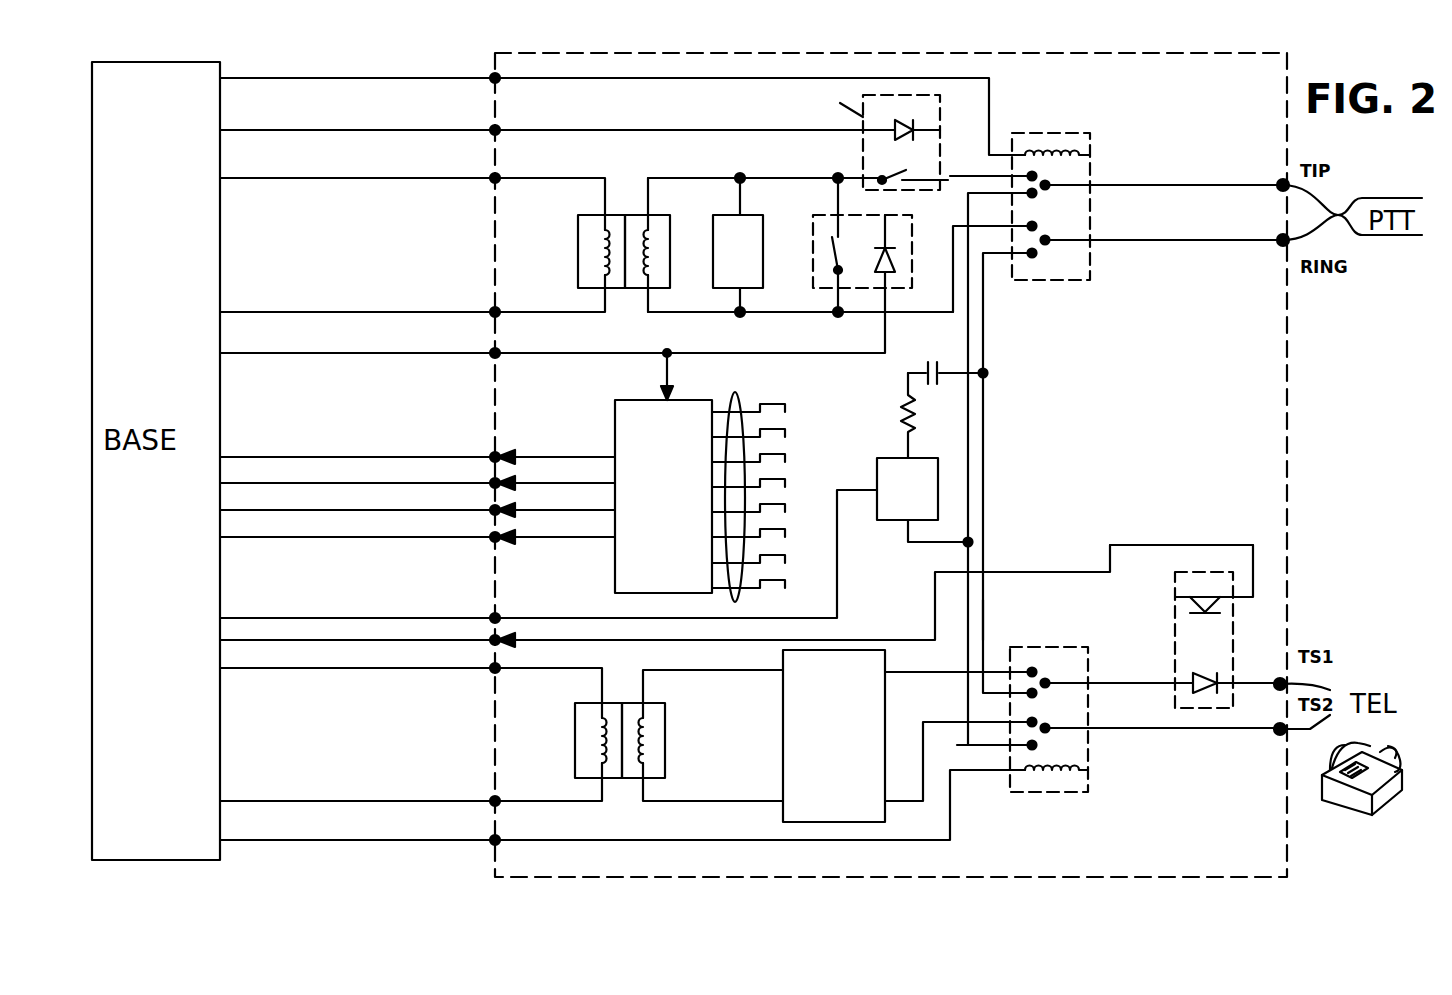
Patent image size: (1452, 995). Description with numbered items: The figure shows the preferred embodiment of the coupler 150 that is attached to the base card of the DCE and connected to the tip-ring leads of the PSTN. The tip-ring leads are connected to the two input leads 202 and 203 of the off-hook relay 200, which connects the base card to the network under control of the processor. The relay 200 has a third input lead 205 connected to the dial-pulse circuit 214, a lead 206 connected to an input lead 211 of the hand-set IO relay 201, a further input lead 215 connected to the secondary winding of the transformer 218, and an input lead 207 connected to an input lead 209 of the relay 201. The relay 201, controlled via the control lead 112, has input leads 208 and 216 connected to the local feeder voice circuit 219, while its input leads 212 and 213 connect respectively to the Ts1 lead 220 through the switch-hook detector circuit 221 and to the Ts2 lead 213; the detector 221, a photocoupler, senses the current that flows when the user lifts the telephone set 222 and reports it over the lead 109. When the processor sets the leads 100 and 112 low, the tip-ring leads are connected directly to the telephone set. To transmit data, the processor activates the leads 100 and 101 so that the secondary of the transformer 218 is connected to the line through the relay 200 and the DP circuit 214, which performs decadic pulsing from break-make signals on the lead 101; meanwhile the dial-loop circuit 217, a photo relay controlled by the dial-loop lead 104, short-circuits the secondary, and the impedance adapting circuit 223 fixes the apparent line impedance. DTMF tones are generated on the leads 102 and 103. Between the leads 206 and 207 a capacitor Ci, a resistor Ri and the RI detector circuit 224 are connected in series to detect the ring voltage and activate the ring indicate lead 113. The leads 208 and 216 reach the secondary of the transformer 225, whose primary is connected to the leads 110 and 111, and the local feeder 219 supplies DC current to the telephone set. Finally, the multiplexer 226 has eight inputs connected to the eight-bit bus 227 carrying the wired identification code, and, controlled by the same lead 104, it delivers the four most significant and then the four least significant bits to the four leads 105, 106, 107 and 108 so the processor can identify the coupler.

The off-hook lead 100 is at (622, 104).
The dial-pulse lead 101 is at (580, 120).
The AN1-A lead 102 is at (412, 192).
The AN1-B lead 103 is at (412, 296).
The dial-loop lead 104 is at (552, 336).
The identification lead 105 is at (417, 449).
The identification lead 106 is at (417, 475).
The identification lead 107 is at (417, 502).
The identification lead 108 is at (417, 529).
The switch-hook lead 109 is at (736, 596).
The AN2-A lead 110 is at (411, 681).
The AN2-B lead 111 is at (411, 784).
The hand-set IO control lead 112 is at (622, 807).
The ring indicate lead 113 is at (548, 556).
The coupler 150 is at (891, 465).
The off-hook relay 200 is at (1025, 282).
The hand-set IO relay 201 is at (1035, 795).
The input lead 202 is at (1132, 185).
The input lead 203 is at (1130, 243).
The third input lead 205 is at (951, 174).
The lead 206 is at (972, 270).
The input lead 207 is at (987, 316).
The input lead 208 is at (905, 670).
The input lead 209 is at (985, 621).
The input lead 211 is at (957, 754).
The input lead 212 is at (1100, 684).
The Ts2 lead 213 is at (1242, 731).
The dial-pulse circuit 214 is at (925, 207).
The input lead 215 is at (952, 262).
The input lead 216 is at (945, 718).
The dial-loop circuit 217 is at (910, 282).
The transformer 218 is at (590, 290).
The local feeder voice circuit 219 is at (780, 653).
The Ts1 lead 220 is at (1247, 681).
The switch-hook detector circuit 221 is at (1160, 542).
The telephone set 222 is at (1362, 793).
The impedance adapting circuit 223 is at (758, 222).
The RI detector circuit 224 is at (890, 522).
The transformer 225 is at (668, 705).
The multiplexer 226 is at (615, 593).
The 8-bits bus 227 is at (738, 393).